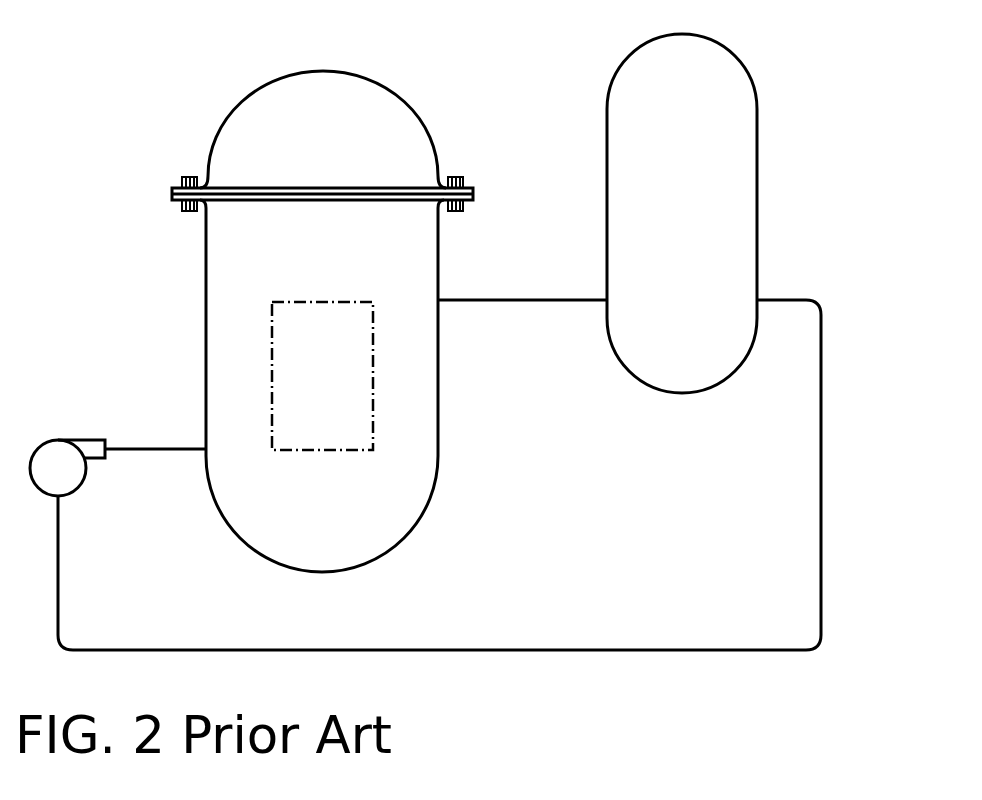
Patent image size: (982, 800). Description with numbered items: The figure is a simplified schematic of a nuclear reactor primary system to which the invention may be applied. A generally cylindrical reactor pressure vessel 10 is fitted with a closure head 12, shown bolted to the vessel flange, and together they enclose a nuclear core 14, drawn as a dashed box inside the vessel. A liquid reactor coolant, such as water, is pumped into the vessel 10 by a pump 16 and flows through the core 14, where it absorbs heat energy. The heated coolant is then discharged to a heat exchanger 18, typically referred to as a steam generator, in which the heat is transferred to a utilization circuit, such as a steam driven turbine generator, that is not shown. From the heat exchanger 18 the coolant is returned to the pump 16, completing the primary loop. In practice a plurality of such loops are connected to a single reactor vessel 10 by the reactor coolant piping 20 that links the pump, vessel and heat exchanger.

The reactor pressure vessel 10 is at (306, 390).
The closure head 12 is at (222, 130).
The nuclear core 14 is at (272, 362).
The pump 16 is at (53, 439).
The heat exchanger 18 is at (757, 147).
The reactor coolant piping 20 is at (821, 577).